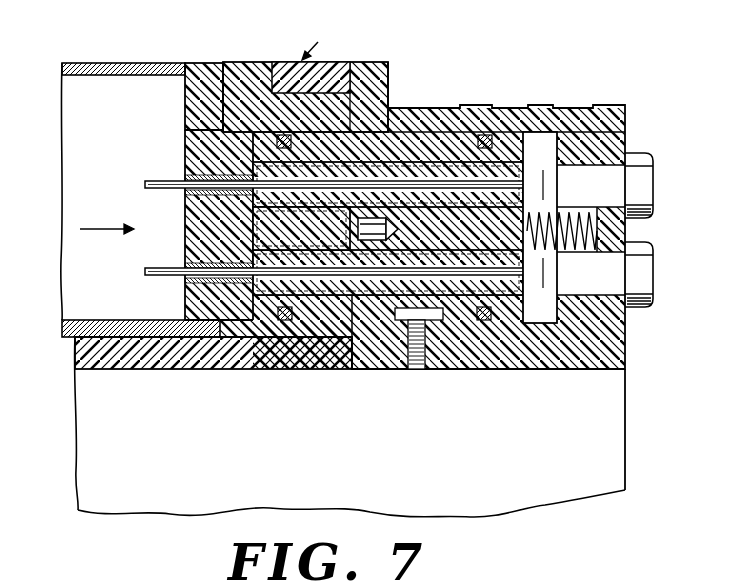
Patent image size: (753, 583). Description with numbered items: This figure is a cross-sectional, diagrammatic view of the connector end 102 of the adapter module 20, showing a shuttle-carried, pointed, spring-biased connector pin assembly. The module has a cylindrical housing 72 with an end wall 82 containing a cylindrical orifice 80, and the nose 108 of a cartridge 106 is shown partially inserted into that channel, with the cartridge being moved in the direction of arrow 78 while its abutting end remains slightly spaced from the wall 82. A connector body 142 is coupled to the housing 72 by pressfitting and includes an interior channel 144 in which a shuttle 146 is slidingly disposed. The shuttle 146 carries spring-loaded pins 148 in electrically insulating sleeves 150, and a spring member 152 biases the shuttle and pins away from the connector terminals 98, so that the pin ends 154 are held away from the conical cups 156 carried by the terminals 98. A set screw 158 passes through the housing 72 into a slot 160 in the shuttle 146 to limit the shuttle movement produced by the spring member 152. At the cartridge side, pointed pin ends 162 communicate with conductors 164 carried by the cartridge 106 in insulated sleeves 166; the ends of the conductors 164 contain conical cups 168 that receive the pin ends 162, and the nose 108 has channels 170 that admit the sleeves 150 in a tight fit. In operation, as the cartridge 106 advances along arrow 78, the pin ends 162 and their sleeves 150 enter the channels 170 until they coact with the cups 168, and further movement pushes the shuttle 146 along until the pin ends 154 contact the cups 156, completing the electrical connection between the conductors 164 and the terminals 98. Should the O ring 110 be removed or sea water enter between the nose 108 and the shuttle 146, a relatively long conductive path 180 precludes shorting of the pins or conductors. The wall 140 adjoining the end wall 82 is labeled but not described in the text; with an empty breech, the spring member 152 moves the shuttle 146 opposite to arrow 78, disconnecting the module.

The adapter module 20 is at (322, 46).
The cylindrical housing 72 is at (173, 352).
The arrow 78 is at (108, 224).
The cylindrical orifice 80 is at (250, 322).
The end wall 82 is at (223, 92).
The connector terminals 98 is at (655, 198).
The connector end 102 is at (443, 109).
The cartridge 106 is at (160, 63).
The nose 108 is at (305, 97).
The O ring 110 is at (288, 322).
The wall 140 is at (223, 110).
The connector body 142 is at (404, 107).
The interior channel 144 is at (538, 148).
The shuttle 146 is at (520, 333).
The spring-loaded pins 148 is at (501, 206).
The electrically insulating sleeves 150 is at (377, 154).
The spring member 152 is at (625, 234).
The pin ends 154 is at (547, 185).
The conical cups 156 is at (580, 160).
The set screw 158 is at (430, 364).
The slot 160 is at (447, 317).
The pointed pin ends 162 is at (252, 162).
The conductors 164 is at (160, 178).
The insulated sleeves 166 is at (190, 207).
The conical cups 168 is at (250, 196).
The channels 170 is at (333, 335).
The conductive path 180 is at (393, 231).